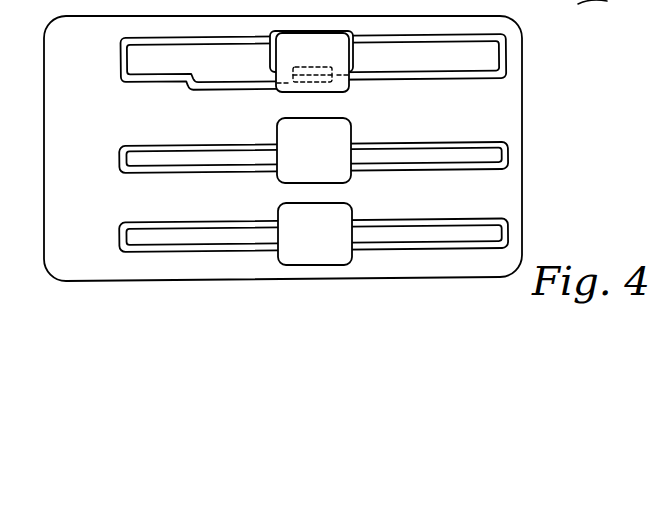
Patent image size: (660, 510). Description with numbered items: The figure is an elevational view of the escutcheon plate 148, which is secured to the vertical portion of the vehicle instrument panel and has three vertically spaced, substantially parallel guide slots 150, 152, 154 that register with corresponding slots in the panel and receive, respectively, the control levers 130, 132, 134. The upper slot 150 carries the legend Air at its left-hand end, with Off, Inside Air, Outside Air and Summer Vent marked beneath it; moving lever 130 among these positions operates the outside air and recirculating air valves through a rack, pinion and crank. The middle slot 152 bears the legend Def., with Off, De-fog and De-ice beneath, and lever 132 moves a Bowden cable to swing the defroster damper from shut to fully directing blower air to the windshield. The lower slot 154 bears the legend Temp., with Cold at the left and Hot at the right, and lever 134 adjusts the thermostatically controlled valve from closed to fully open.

The control lever 130 is at (330, 51).
The control lever 132 is at (338, 173).
The control lever 134 is at (332, 248).
The escutcheon plate 148 is at (512, 133).
The guide slot 150 is at (488, 58).
The guide slot 152 is at (490, 158).
The guide slot 154 is at (490, 235).